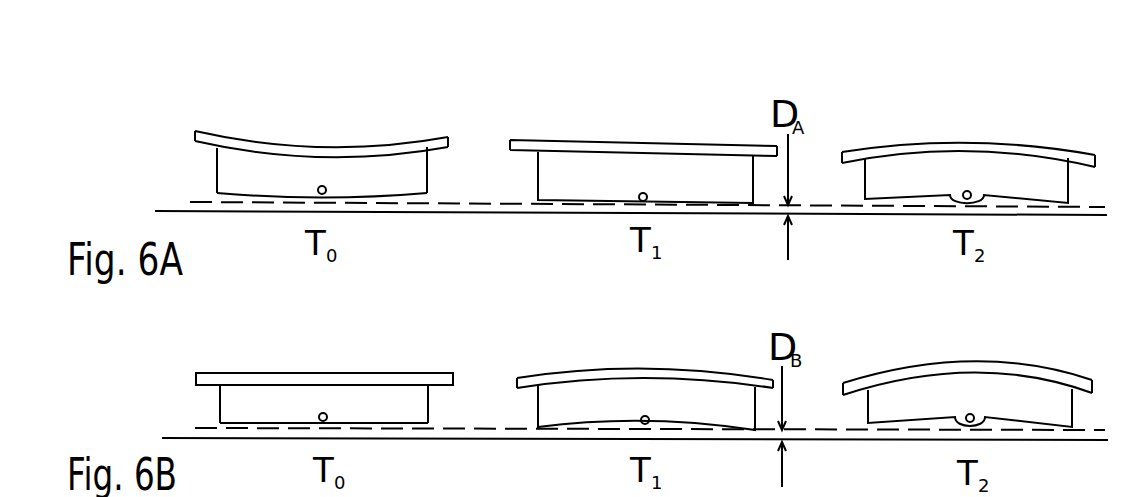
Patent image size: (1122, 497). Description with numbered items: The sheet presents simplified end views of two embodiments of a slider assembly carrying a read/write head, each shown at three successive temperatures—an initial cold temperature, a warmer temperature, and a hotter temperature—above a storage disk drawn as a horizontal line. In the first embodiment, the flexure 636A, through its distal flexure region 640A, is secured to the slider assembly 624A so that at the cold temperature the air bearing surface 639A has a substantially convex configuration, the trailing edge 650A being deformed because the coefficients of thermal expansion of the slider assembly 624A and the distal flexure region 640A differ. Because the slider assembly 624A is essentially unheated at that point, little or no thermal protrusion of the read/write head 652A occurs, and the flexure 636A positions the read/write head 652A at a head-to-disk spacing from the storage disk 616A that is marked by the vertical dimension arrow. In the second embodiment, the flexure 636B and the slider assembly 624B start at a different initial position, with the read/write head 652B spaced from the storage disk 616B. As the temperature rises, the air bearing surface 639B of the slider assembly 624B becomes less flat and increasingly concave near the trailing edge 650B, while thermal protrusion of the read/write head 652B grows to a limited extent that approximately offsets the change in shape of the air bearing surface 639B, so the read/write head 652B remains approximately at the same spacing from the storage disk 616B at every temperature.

In FIG. 6A, the storage disk 616A is at (178, 210).
In FIG. 6A, the trailing edge 650A is at (250, 167).
In FIG. 6A, the read/write head 652A is at (320, 186).
In FIG. 6A, the flexure 636A is at (340, 147).
In FIG. 6A, the distal flexure region 640A is at (366, 98).
In FIG. 6A, the slider assembly 624A is at (350, 173).
In FIG. 6A, the air bearing surface 639A is at (388, 195).
In FIG. 6B, the storage disk 616B is at (182, 436).
In FIG. 6B, the trailing edge 650B is at (267, 395).
In FIG. 6B, the read/write head 652B is at (322, 412).
In FIG. 6B, the flexure 636B is at (365, 374).
In FIG. 6B, the slider assembly 624B is at (367, 398).
In FIG. 6B, the air bearing surface 639B is at (388, 422).